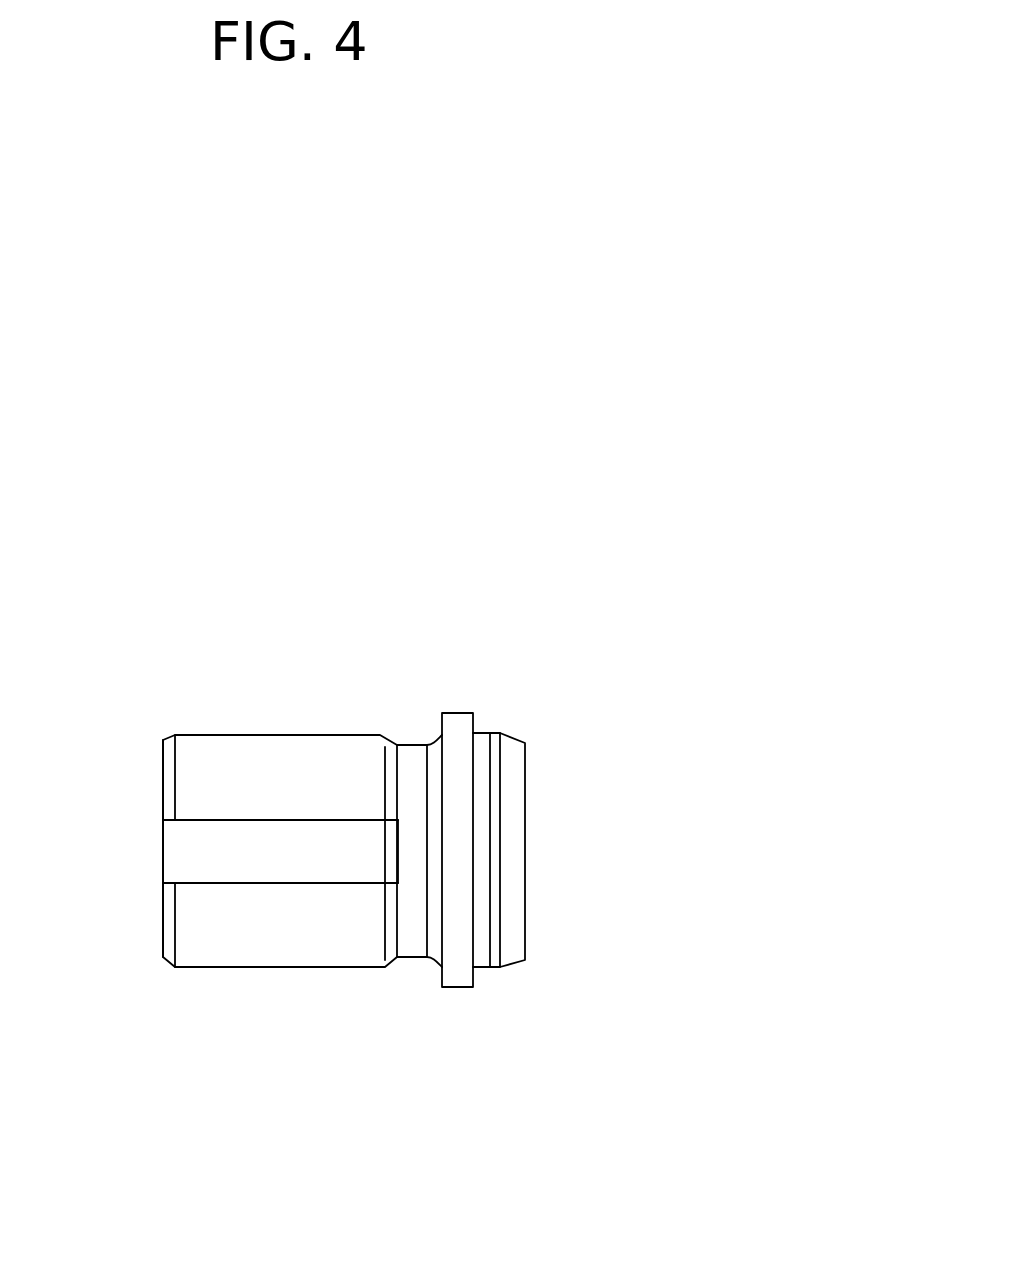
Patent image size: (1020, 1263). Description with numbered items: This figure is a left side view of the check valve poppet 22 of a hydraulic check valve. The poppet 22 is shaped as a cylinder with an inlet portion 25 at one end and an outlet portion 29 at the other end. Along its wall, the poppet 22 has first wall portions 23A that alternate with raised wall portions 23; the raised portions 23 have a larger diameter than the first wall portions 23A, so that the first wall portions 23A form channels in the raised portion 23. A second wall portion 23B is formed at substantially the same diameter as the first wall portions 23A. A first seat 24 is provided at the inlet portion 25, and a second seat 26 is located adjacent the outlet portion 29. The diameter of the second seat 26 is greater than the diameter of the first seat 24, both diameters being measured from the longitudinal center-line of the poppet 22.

The check valve poppet 22 is at (464, 739).
The raised wall portion 23 is at (220, 752).
The first wall portion 23A is at (288, 860).
The second wall portion 23B is at (414, 772).
The first seat 24 is at (172, 782).
The inlet portion 25 is at (162, 848).
The second seat 26 is at (441, 710).
The outlet portion 29 is at (525, 867).